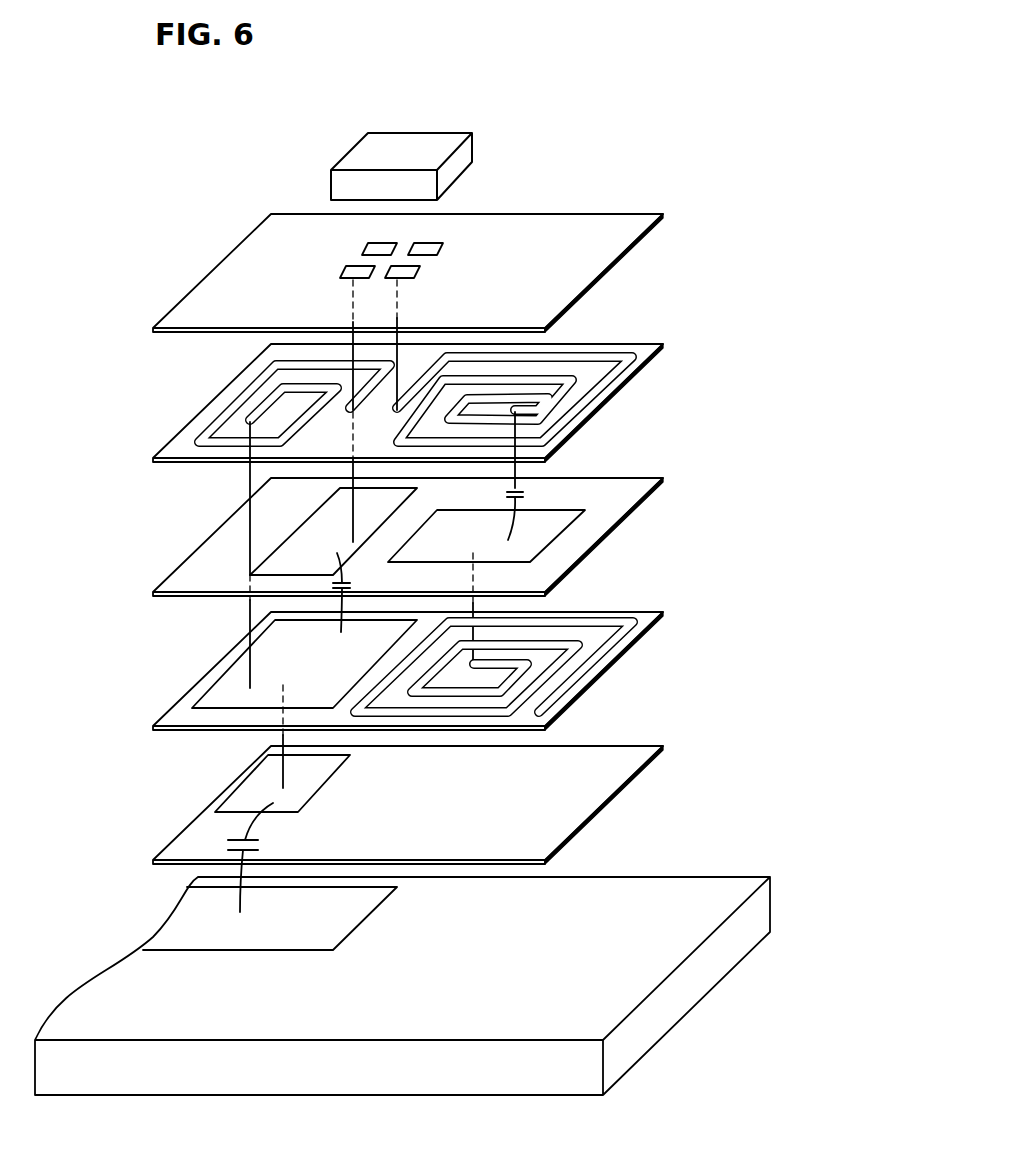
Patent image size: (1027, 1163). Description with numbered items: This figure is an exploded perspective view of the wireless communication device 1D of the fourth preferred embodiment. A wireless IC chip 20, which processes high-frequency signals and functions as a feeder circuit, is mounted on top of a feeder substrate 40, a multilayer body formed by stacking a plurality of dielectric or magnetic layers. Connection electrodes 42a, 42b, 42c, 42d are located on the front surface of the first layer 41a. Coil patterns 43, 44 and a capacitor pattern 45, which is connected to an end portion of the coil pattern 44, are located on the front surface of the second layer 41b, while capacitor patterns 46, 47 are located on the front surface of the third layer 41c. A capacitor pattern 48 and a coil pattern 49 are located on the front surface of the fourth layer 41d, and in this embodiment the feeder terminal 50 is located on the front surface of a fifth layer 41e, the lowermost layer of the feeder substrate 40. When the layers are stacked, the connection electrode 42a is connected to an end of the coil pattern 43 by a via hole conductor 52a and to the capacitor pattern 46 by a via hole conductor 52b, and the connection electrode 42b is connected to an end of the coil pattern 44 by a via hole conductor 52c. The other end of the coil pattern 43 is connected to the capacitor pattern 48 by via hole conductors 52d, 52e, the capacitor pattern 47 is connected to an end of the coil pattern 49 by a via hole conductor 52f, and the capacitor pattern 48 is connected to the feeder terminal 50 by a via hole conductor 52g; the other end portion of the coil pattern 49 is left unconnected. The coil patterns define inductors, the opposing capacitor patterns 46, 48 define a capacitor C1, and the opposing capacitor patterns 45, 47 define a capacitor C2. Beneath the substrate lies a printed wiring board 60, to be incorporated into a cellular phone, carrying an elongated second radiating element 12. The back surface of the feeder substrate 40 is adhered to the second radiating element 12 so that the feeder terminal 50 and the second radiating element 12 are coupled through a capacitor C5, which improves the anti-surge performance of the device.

The wireless communication device 1D is at (716, 96).
The wireless IC chip 20 is at (423, 142).
The feeder substrate 40 is at (220, 219).
The first layer 41a is at (628, 217).
The second layer 41b is at (628, 347).
The third layer 41c is at (628, 478).
The fourth layer 41d is at (628, 612).
The fifth layer 41e is at (628, 748).
The connection electrode 42a is at (345, 272).
The connection electrode 42b is at (415, 272).
The connection electrode 42c is at (368, 249).
The connection electrode 42d is at (438, 249).
The coil pattern 43 is at (252, 373).
The coil pattern 44 is at (605, 382).
The capacitor pattern 45 is at (517, 410).
The capacitor pattern 46 is at (332, 502).
The capacitor pattern 47 is at (528, 510).
The capacitor pattern 48 is at (238, 670).
The coil pattern 49 is at (602, 650).
The feeder terminal 50 is at (260, 775).
The via hole conductor 52a is at (350, 347).
The via hole conductor 52b is at (355, 500).
The via hole conductor 52c is at (403, 347).
The via hole conductor 52d is at (250, 532).
The via hole conductor 52e is at (253, 663).
The via hole conductor 52f is at (477, 603).
The via hole conductor 52g is at (285, 783).
The capacitor C1 is at (359, 592).
The capacitor C2 is at (497, 511).
The capacitor C5 is at (263, 857).
The printed wiring board 60 is at (627, 883).
The second radiating element 12 is at (249, 938).